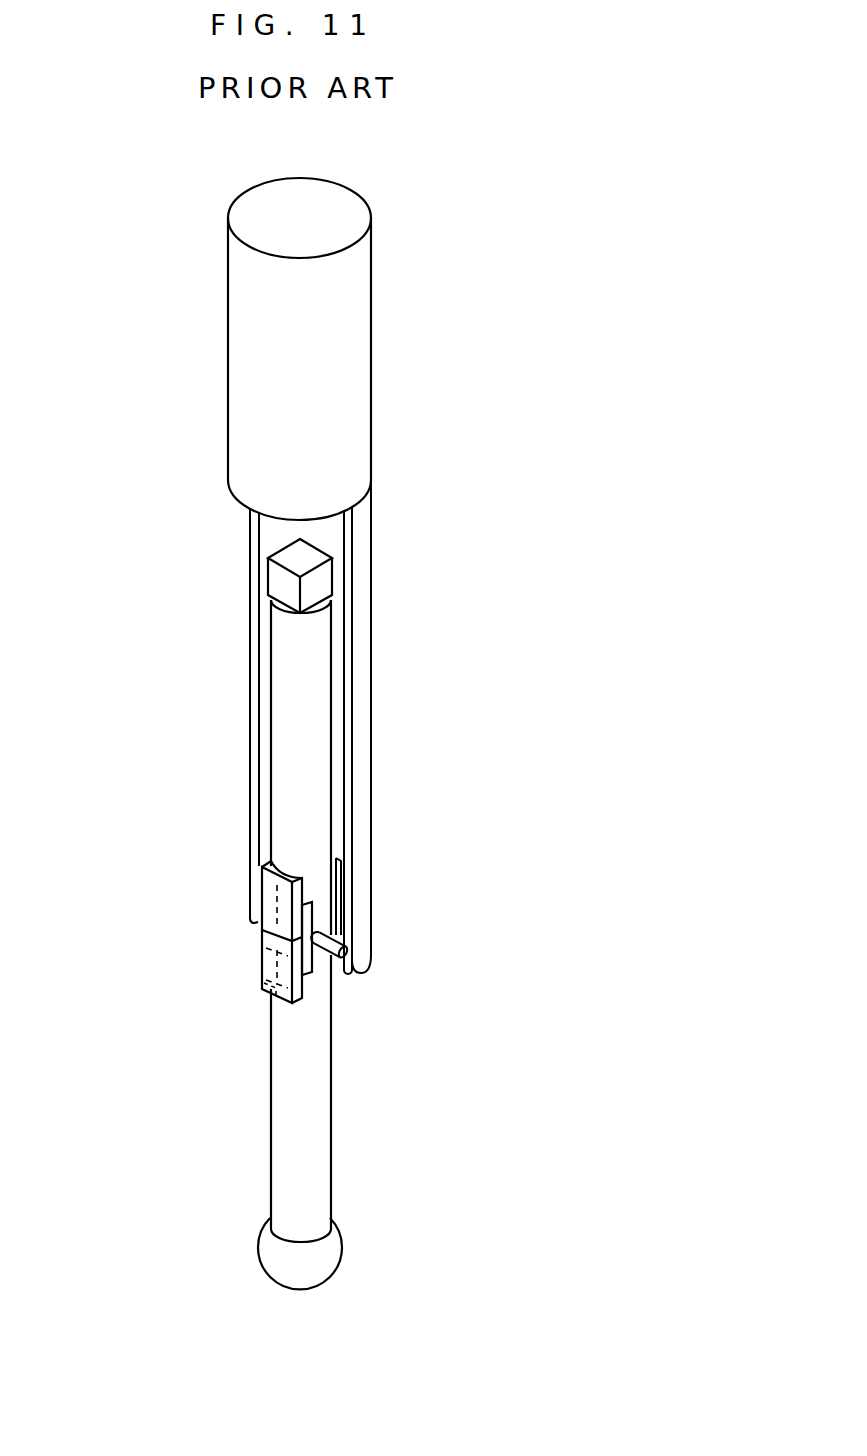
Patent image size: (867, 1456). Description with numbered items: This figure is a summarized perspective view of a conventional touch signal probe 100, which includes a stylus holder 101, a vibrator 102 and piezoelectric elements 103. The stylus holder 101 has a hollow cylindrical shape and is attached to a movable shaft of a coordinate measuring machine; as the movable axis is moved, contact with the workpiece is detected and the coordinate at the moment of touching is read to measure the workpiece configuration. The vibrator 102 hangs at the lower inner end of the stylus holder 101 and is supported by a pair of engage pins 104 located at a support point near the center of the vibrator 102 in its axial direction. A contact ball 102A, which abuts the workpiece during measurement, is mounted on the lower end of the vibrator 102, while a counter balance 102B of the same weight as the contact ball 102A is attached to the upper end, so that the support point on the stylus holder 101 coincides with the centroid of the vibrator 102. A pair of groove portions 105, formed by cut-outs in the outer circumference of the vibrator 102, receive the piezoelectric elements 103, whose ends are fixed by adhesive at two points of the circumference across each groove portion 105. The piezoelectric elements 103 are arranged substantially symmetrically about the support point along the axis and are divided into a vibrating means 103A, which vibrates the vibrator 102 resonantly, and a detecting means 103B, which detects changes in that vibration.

The touch signal probe 100 is at (152, 312).
The stylus holder 101 is at (347, 418).
The vibrator 102 is at (313, 1108).
The contact ball 102A is at (338, 1267).
The counter balance 102B is at (318, 582).
The piezoelectric element 103 is at (117, 882).
The vibrating means 103A is at (257, 908).
The detecting means 103B is at (270, 965).
The engage pin 104 is at (350, 933).
The groove portion 105 is at (263, 995).